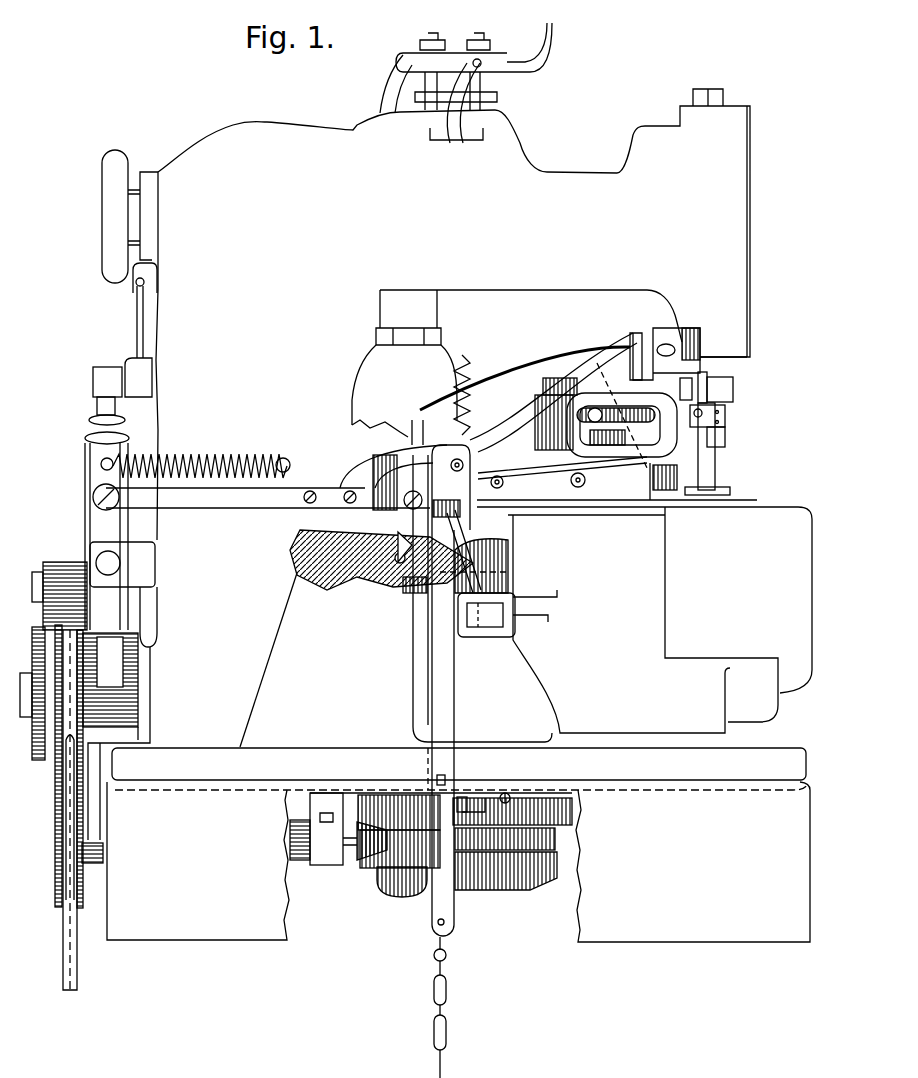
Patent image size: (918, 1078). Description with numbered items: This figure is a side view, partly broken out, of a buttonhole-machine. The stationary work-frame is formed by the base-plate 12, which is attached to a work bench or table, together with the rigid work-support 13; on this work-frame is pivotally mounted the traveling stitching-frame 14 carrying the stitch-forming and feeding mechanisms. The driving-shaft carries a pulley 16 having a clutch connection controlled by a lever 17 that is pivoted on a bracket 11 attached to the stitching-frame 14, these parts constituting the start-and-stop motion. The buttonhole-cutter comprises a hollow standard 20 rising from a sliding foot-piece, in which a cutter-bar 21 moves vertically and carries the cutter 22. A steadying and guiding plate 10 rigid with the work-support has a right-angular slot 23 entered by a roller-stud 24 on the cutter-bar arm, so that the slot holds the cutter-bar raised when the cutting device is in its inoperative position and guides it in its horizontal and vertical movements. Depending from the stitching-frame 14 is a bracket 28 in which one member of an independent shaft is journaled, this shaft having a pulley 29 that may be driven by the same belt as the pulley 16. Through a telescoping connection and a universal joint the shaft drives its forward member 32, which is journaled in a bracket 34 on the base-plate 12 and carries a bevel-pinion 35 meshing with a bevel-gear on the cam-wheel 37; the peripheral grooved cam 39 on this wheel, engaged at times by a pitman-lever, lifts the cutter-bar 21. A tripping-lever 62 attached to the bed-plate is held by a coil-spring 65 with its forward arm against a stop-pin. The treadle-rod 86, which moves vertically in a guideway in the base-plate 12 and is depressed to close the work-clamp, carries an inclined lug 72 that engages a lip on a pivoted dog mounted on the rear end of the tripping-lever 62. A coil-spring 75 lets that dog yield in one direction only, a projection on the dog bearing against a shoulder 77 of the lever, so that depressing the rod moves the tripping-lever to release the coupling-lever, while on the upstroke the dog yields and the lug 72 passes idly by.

The steadying and guiding plate 10 is at (620, 400).
The bracket 11 is at (122, 564).
The base-plate 12 is at (458, 845).
The work-support 13 is at (612, 598).
The stitching-frame 14 is at (426, 281).
The pulley 16 is at (58, 742).
The lever 17 is at (87, 513).
The hollow standard 20 is at (540, 415).
The cutter-bar 21 is at (563, 380).
The cutter 22 is at (648, 478).
The right-angular slot 23 is at (648, 418).
The roller-stud 24 is at (595, 408).
The bracket 28 is at (90, 858).
The pulley 29 is at (56, 858).
The shaft member 32 is at (355, 860).
The bracket 34 is at (316, 829).
The bevel-pinion 35 is at (370, 862).
The cam-wheel 37 is at (420, 895).
The grooved cam 39 is at (535, 857).
The tripping-lever 62 is at (548, 797).
The coil-spring 65 is at (505, 793).
The inclined lug 72 is at (428, 778).
The coil-spring 75 is at (463, 797).
The shoulder 77 is at (470, 795).
The treadle-rod 86 is at (438, 655).